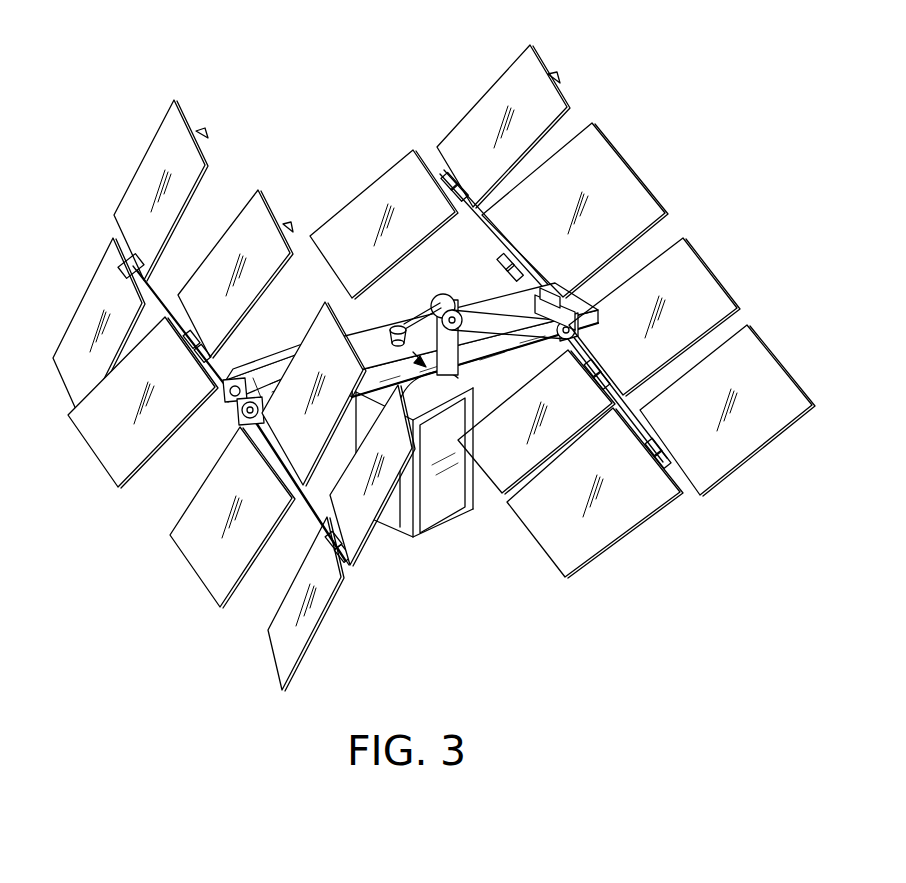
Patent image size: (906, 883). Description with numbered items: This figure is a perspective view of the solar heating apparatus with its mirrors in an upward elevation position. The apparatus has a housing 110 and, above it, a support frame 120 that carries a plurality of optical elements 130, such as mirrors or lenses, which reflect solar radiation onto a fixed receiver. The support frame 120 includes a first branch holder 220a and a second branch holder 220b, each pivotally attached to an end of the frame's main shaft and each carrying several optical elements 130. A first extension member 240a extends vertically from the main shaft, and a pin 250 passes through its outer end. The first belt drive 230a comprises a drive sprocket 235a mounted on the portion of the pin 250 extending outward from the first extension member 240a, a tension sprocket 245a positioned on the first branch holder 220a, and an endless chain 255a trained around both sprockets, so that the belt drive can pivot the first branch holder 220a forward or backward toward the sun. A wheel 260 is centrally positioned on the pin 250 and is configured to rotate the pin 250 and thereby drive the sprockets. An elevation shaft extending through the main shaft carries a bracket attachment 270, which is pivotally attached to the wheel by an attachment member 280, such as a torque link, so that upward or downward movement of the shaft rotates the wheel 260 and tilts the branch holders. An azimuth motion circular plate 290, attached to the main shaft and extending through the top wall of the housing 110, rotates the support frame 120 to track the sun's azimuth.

The housing 110 is at (414, 493).
The support frame 120 is at (464, 406).
The optical elements 130 is at (102, 256).
The first branch holder 220a is at (437, 160).
The second branch holder 220b is at (230, 420).
The first belt drive 230a is at (544, 354).
The drive sprocket 235a is at (533, 296).
The first extension member 240a is at (460, 370).
The tension sprocket 245a is at (580, 328).
The pin 250 is at (460, 312).
The endless chain 255a is at (562, 292).
The wheel 260 is at (445, 295).
The bracket attachment 270 is at (458, 440).
The attachment member 280 is at (400, 318).
The azimuth motion circular plate 290 is at (440, 408).